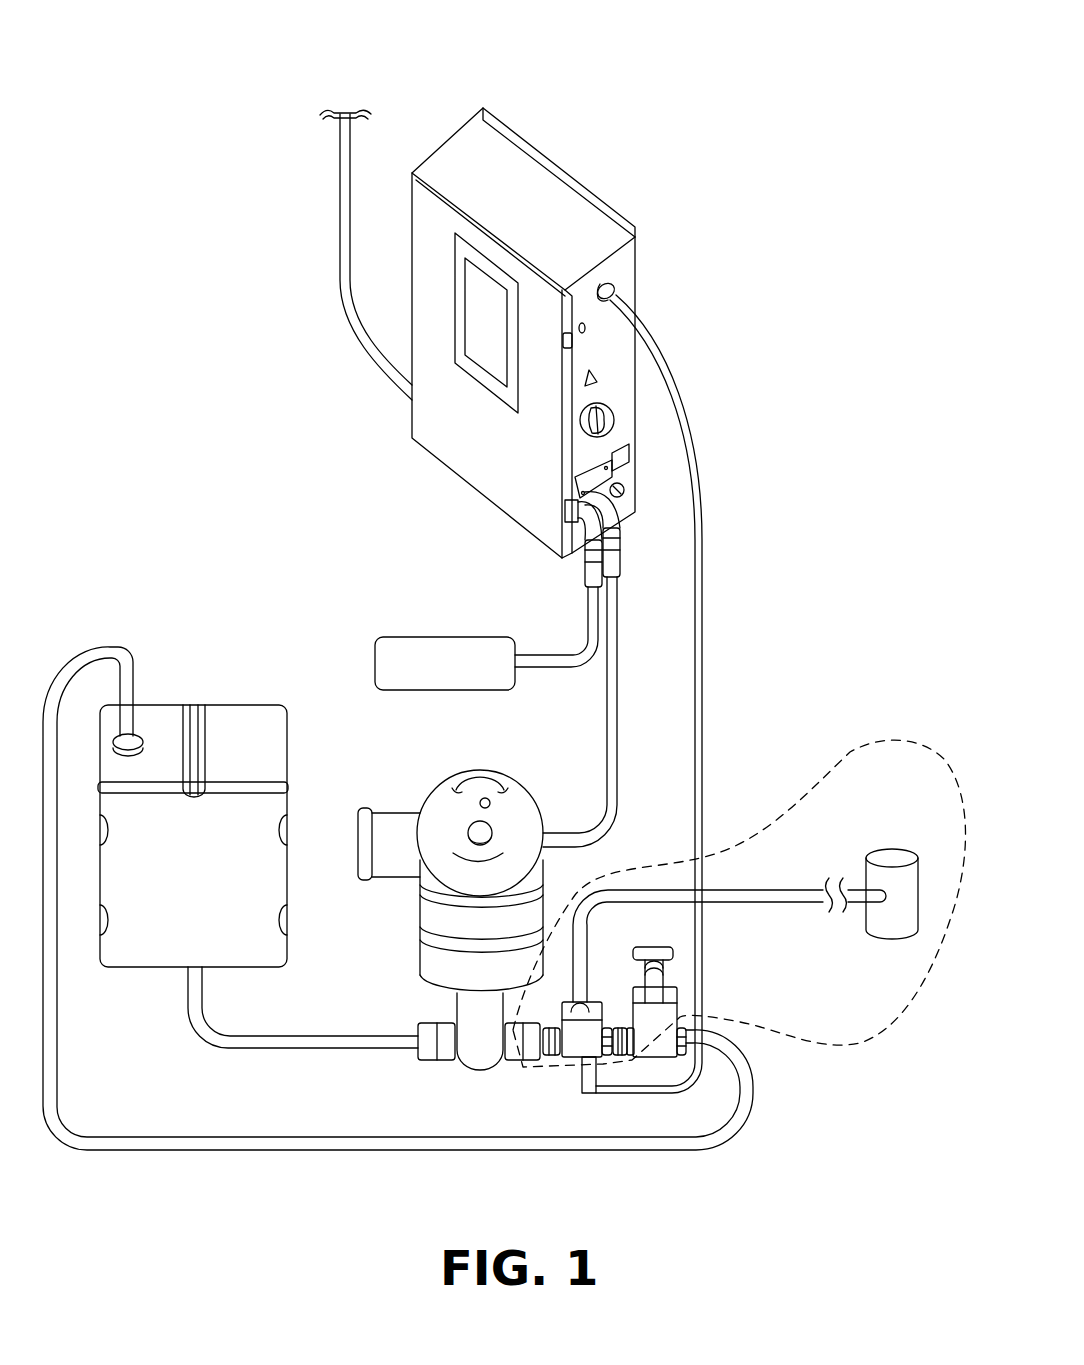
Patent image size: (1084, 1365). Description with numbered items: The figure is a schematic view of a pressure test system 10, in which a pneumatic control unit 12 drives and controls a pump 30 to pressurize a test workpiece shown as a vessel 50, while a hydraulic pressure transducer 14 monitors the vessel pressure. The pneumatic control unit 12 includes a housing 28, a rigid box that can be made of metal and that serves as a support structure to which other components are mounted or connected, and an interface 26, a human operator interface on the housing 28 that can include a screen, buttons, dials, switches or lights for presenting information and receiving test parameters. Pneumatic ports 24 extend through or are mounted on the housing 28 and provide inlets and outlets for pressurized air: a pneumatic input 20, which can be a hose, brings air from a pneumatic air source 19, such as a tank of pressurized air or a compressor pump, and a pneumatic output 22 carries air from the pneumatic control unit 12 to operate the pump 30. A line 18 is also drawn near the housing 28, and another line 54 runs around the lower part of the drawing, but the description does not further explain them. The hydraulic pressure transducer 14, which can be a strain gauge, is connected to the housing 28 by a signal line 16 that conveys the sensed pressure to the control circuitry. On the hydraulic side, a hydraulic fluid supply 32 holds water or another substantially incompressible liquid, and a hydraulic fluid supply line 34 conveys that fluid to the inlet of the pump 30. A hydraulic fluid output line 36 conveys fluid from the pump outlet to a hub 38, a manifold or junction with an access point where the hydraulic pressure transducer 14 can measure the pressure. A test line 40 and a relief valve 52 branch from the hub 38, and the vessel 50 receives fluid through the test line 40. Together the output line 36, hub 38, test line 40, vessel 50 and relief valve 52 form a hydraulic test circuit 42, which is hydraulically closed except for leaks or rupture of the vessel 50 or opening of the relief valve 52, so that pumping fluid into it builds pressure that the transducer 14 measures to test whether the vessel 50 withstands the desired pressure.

The pressure test system 10 is at (721, 66).
The pneumatic control unit 12 is at (440, 462).
The hydraulic pressure transducer 14 is at (555, 1078).
The signal line 16 is at (707, 570).
The supply line 18 is at (352, 157).
The pneumatic air source 19 is at (373, 668).
The pneumatic input 20 is at (580, 652).
The pneumatic output 22 is at (617, 640).
The pneumatic ports 24 is at (560, 524).
The interface 26 is at (475, 307).
The housing 28 is at (637, 270).
The pump 30 is at (531, 800).
The hydraulic fluid supply 32 is at (160, 692).
The hydraulic fluid supply line 34 is at (321, 1036).
The hydraulic fluid output line 36 is at (521, 1058).
The hub 38 is at (598, 1003).
The test line 40 is at (812, 855).
The hydraulic test circuit 42 is at (845, 1047).
The vessel 50 is at (895, 940).
The relief valve 52 is at (674, 1007).
The return line 54 is at (586, 1150).